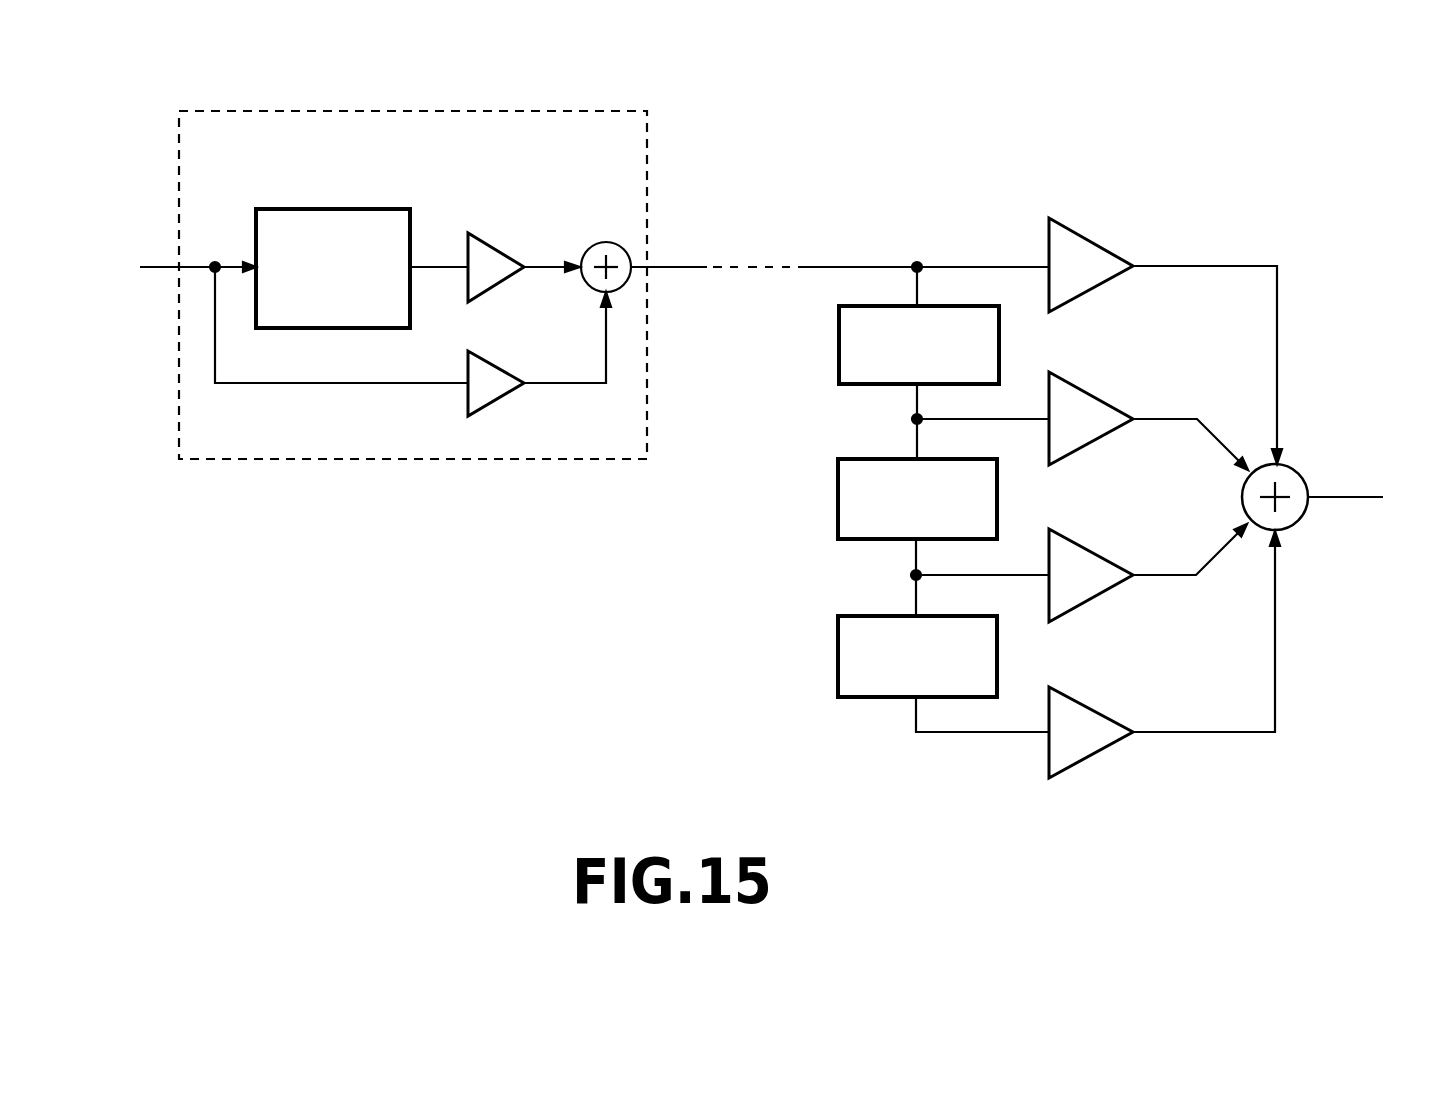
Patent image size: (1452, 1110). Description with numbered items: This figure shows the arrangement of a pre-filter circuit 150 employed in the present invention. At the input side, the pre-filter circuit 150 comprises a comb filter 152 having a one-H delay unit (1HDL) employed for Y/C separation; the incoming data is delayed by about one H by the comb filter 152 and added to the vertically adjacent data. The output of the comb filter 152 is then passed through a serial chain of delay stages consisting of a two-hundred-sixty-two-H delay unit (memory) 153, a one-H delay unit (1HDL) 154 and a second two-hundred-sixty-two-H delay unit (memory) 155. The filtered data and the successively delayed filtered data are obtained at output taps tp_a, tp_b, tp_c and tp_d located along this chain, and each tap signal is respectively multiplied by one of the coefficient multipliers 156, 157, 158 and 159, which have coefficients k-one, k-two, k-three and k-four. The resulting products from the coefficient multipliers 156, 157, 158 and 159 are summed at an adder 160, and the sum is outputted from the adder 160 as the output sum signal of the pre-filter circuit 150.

The pre-filter circuit 150 is at (778, 238).
The comb filter 152 is at (500, 111).
The 262H delay unit 153 is at (839, 337).
The 1H delay unit 154 is at (838, 493).
The 262H delay unit 155 is at (838, 650).
The coefficient multiplier 156 is at (1085, 242).
The coefficient multiplier 157 is at (1085, 396).
The coefficient multiplier 158 is at (1085, 555).
The coefficient multiplier 159 is at (1085, 717).
The adder 160 is at (1293, 477).